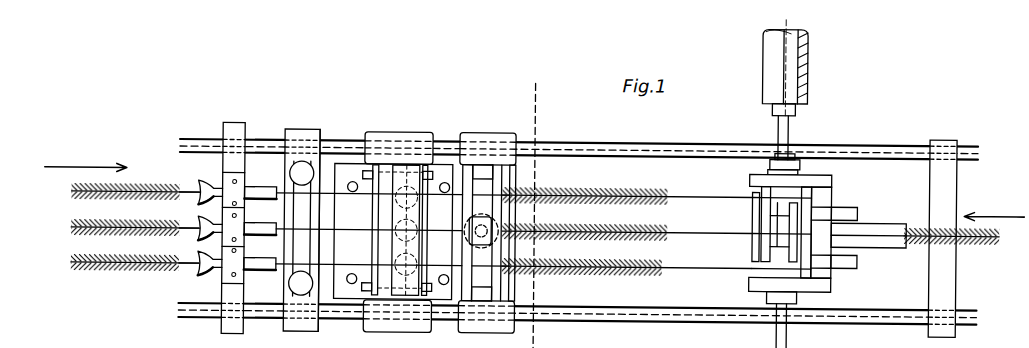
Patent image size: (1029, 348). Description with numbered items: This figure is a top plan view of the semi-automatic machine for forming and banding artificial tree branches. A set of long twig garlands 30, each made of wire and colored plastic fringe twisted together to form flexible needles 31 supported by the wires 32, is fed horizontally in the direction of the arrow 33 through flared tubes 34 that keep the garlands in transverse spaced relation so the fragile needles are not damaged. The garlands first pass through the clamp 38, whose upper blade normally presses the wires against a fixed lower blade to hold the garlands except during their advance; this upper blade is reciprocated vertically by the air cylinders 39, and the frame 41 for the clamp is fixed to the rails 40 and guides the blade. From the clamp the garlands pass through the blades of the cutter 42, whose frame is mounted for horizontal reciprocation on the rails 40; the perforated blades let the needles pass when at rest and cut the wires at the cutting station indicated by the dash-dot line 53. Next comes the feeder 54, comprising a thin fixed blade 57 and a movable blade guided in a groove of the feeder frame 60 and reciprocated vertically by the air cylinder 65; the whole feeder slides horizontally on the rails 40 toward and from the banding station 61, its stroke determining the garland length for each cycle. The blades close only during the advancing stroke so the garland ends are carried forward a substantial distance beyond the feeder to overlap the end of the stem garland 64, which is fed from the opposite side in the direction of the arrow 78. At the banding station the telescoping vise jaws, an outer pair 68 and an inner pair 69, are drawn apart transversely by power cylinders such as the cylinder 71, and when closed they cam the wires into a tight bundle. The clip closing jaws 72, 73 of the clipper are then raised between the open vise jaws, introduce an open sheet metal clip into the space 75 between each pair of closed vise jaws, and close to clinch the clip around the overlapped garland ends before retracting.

The twig garlands 30 is at (121, 276).
The flexible needles 31 is at (73, 266).
The wires 32 is at (183, 266).
The arrow 33 is at (77, 166).
The flared tubes 34 is at (203, 184).
The clamp 38 is at (319, 209).
The air cylinders 39 is at (294, 166).
The rails 40 is at (199, 140).
The frame 41 is at (324, 130).
The cutter 42 is at (408, 126).
The dash-dot line 53 is at (541, 115).
The feeder 54 is at (499, 218).
The fixed blade 57 is at (508, 228).
The feeder frame 60 is at (506, 287).
The banding station 61 is at (775, 47).
The stem garland 64 is at (970, 241).
The air cylinder 65 is at (499, 240).
The outer pair of vise jaws 68 is at (760, 246).
The inner pair of vise jaws 69 is at (760, 184).
The power cylinder 71 is at (801, 84).
The clip closing jaws 72 is at (770, 194).
The clipper jaw 73 is at (765, 259).
The space 75 is at (785, 222).
The arrow 78 is at (997, 201).